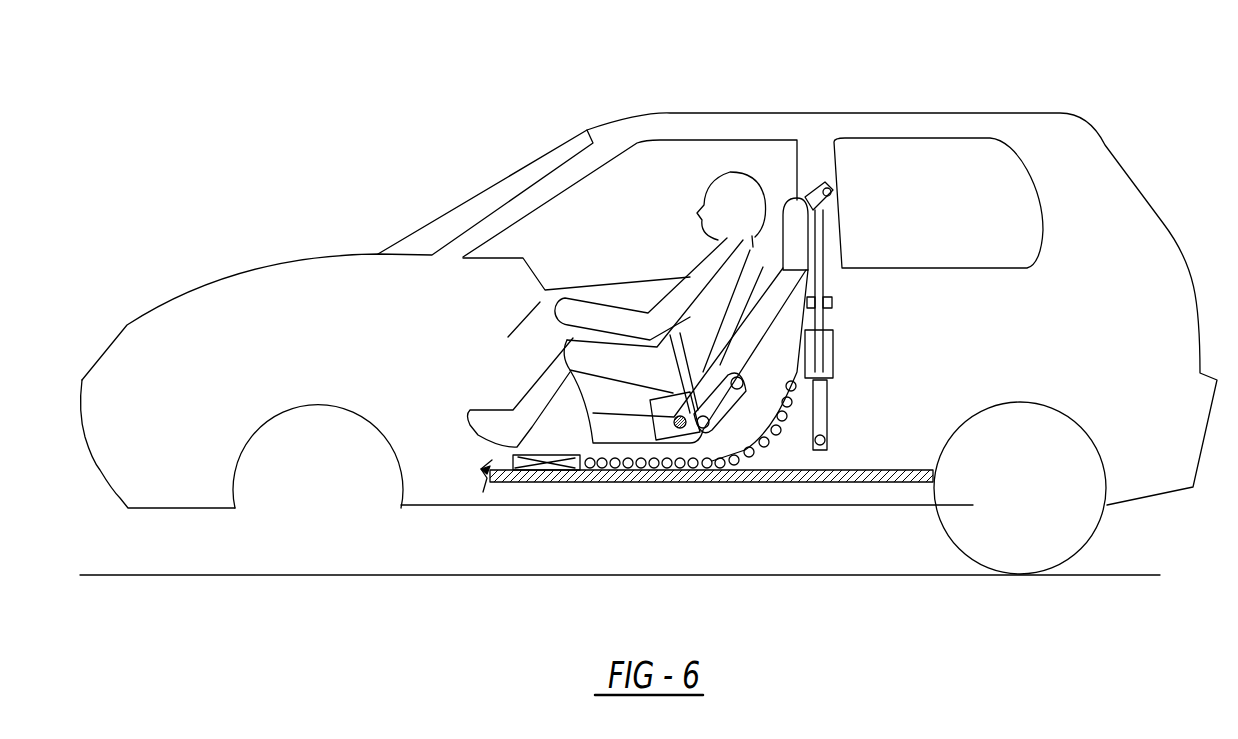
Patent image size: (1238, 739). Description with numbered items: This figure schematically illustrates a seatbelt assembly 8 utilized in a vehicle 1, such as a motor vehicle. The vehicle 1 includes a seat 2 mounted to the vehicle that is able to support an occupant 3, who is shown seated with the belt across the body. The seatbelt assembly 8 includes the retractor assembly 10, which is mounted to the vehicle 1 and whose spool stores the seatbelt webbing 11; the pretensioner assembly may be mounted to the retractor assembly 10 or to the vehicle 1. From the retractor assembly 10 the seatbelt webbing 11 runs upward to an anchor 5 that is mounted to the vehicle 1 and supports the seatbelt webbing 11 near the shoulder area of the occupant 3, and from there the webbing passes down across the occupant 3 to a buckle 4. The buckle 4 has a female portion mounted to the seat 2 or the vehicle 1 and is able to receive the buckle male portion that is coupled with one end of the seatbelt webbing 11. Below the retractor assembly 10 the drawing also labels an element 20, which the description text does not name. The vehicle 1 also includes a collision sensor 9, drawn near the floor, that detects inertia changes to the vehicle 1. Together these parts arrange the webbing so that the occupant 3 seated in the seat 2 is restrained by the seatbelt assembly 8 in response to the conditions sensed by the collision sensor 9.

The vehicle 1 is at (1122, 195).
The seat 2 is at (598, 440).
The occupant 3 is at (693, 268).
The buckle 4 is at (690, 395).
The anchor 5 is at (830, 187).
The seatbelt assembly 8 is at (900, 296).
The collision sensor 9 is at (542, 472).
The retractor assembly 10 is at (838, 353).
The seatbelt webbing 11 is at (777, 224).
The piston rod 20 is at (820, 418).